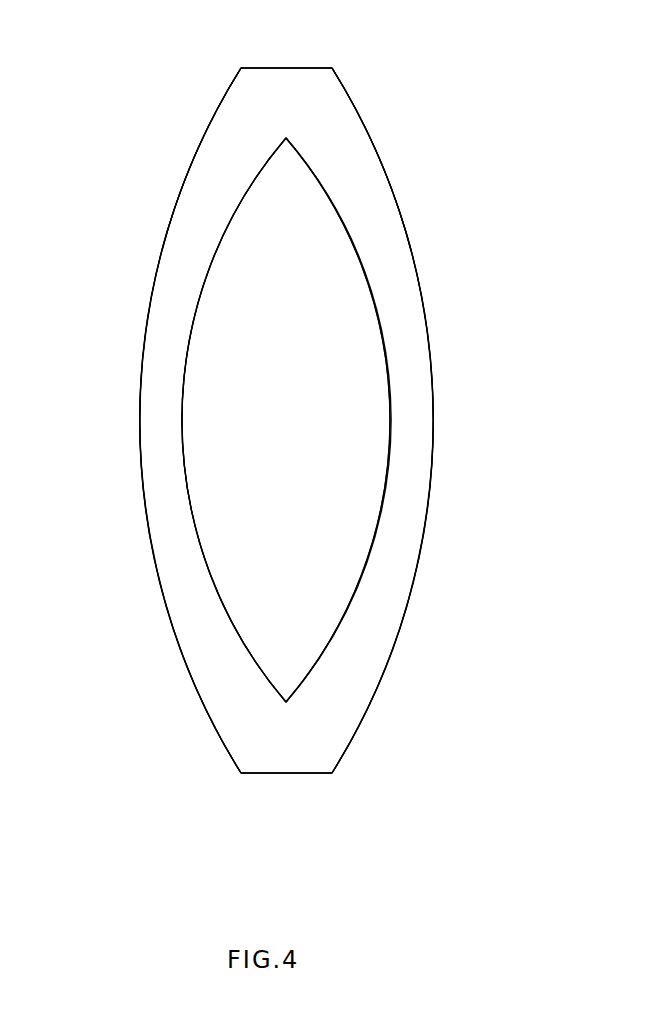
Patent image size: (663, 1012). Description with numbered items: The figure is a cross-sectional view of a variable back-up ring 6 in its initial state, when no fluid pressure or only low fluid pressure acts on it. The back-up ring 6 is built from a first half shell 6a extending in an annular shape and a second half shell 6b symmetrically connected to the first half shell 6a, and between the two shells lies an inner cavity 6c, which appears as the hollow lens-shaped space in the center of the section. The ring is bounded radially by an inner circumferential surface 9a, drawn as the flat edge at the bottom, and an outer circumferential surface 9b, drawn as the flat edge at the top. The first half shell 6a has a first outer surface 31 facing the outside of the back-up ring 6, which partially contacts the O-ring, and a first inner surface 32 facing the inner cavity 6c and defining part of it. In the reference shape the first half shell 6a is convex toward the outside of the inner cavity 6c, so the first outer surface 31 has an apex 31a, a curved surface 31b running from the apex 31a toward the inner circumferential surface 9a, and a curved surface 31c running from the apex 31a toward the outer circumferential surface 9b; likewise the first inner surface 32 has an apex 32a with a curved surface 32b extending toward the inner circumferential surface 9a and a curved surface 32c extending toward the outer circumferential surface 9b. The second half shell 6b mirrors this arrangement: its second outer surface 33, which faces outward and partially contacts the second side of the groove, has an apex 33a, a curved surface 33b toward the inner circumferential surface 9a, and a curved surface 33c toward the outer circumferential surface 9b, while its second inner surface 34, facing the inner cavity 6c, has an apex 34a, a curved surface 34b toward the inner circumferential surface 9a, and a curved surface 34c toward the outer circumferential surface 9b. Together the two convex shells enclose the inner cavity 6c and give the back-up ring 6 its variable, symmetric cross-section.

The back-up ring 6 is at (58, 21).
The first half shell 6a is at (205, 166).
The second half shell 6b is at (382, 185).
The inner cavity 6c is at (298, 475).
The inner circumferential surface 9a is at (286, 773).
The outer circumferential surface 9b is at (286, 68).
The first outer surface 31 is at (102, 488).
The apex 31a is at (140, 420).
The curved surface 31b is at (155, 565).
The curved surface 31c is at (164, 240).
The first inner surface 32 is at (208, 376).
The apex 32a is at (183, 420).
The curved surface 32b is at (192, 503).
The curved surface 32c is at (200, 307).
The second outer surface 33 is at (460, 474).
The apex 33a is at (433, 420).
The curved surface 33b is at (420, 565).
The curved surface 33c is at (411, 248).
The second inner surface 34 is at (363, 349).
The apex 34a is at (390, 420).
The curved surface 34b is at (375, 528).
The curved surface 34c is at (360, 268).